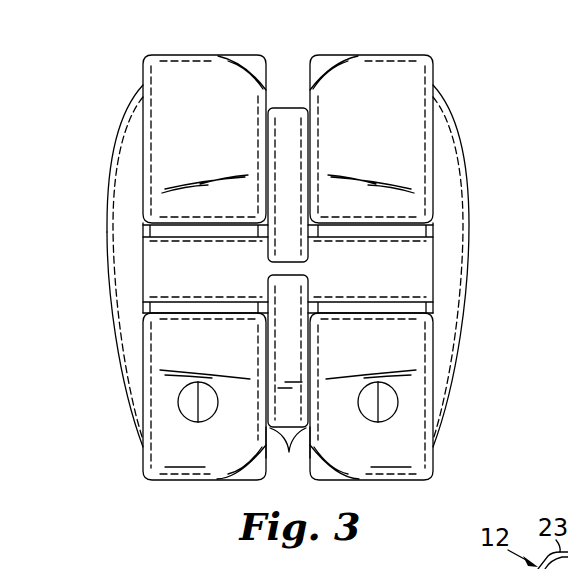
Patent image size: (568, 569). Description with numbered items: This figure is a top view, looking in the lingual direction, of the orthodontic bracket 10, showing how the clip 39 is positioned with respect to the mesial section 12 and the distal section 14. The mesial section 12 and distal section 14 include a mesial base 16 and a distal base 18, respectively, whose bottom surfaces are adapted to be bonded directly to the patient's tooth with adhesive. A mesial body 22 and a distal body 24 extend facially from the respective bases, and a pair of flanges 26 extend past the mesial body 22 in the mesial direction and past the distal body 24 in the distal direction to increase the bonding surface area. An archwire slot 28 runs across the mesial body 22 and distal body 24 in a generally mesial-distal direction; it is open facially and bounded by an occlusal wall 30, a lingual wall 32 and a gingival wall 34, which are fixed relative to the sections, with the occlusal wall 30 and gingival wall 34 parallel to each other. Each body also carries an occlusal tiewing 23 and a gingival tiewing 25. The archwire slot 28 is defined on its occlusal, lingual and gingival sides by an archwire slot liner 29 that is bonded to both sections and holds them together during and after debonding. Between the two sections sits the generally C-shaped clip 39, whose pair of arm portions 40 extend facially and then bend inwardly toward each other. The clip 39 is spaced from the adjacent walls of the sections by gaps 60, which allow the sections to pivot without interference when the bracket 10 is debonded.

The bracket 10 is at (486, 100).
The mesial section 12 is at (490, 248).
The distal section 14 is at (96, 280).
The mesial base 16 is at (463, 340).
The distal base 18 is at (108, 299).
The mesial body 22 is at (433, 225).
The occlusal tiewing 23 is at (186, 55).
The distal body 24 is at (150, 233).
The gingival tiewing 25 is at (182, 482).
The flanges 26 is at (125, 168).
The archwire slot 28 is at (176, 245).
The archwire slot liner 29 is at (177, 305).
The occlusal wall 30 is at (383, 277).
The lingual wall 32 is at (413, 253).
The gingival wall 34 is at (386, 297).
The clip 39 is at (287, 172).
The arm portions 40 is at (293, 185).
The gaps 60 is at (288, 455).